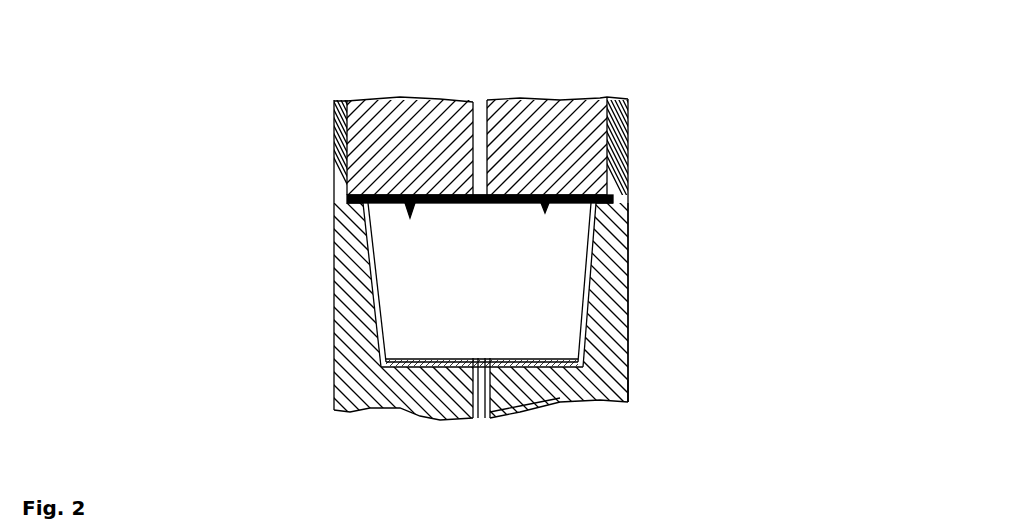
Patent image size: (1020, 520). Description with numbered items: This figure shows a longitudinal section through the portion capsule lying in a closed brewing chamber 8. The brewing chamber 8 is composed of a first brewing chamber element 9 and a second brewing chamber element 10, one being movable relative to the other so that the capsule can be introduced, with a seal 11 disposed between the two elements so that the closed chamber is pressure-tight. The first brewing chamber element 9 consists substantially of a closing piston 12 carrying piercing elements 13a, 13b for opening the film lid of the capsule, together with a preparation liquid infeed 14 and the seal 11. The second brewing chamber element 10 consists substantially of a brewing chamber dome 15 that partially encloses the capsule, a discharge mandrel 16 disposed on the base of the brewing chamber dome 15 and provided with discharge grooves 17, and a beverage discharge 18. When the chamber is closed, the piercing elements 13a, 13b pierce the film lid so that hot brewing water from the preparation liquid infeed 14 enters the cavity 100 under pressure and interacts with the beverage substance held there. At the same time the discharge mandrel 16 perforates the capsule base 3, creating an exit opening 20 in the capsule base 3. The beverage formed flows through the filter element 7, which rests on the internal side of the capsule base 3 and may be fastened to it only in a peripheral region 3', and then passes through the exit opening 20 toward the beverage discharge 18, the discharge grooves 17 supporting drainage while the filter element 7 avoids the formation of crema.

The capsule base 3 is at (479, 333).
The peripheral region of the capsule base 3' is at (358, 414).
The filter element 7 is at (428, 405).
The brewing chamber 8 is at (600, 71).
The first brewing chamber element 9 is at (368, 97).
The second brewing chamber element 10 is at (636, 348).
The seal 11 is at (613, 199).
The closing piston 12 is at (512, 122).
The piercing element 13a is at (412, 210).
The piercing element 13b is at (546, 208).
The preparation liquid infeed 14 is at (482, 127).
The brewing chamber dome 15 is at (593, 296).
The discharge mandrel 16 is at (470, 417).
The discharge grooves 17 is at (513, 407).
The beverage discharge 18 is at (489, 419).
The exit opening 20 is at (478, 350).
The cavity 100 is at (628, 380).